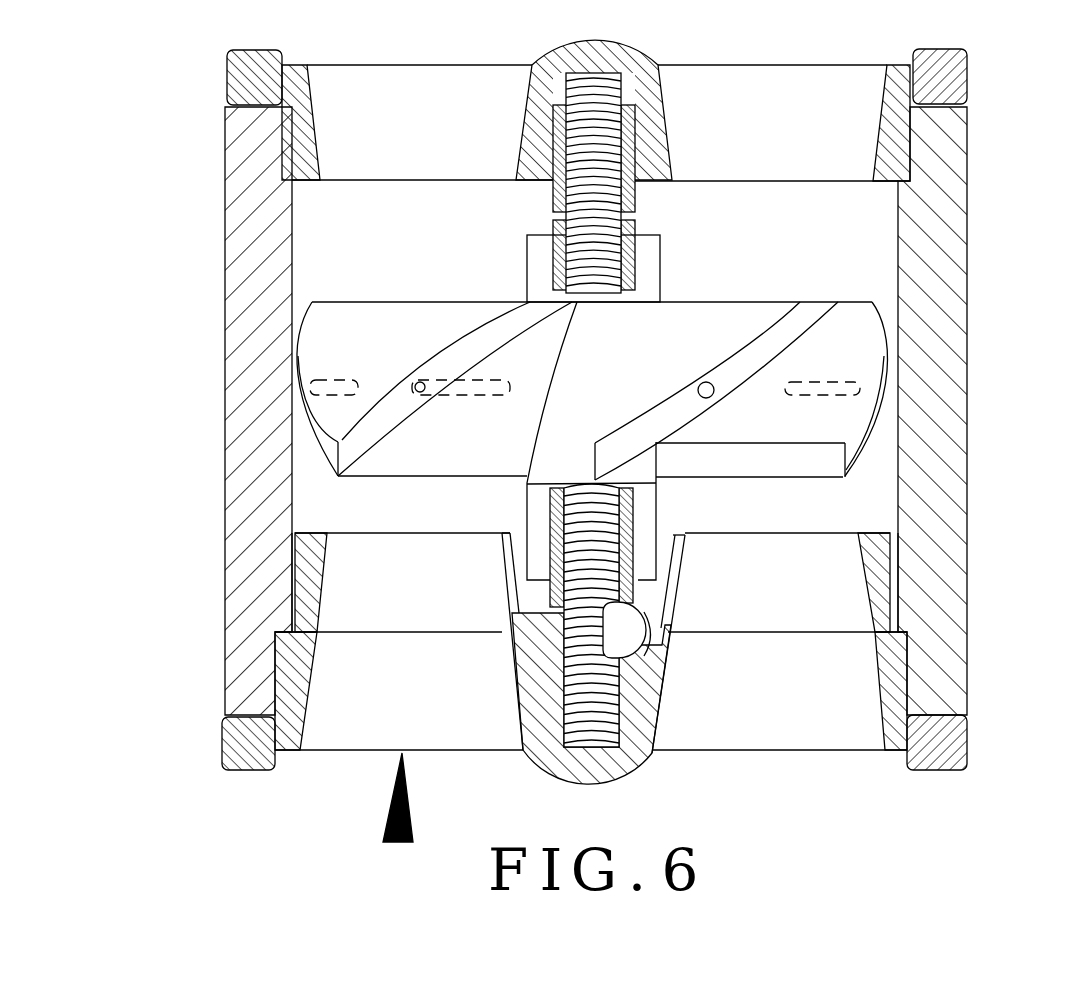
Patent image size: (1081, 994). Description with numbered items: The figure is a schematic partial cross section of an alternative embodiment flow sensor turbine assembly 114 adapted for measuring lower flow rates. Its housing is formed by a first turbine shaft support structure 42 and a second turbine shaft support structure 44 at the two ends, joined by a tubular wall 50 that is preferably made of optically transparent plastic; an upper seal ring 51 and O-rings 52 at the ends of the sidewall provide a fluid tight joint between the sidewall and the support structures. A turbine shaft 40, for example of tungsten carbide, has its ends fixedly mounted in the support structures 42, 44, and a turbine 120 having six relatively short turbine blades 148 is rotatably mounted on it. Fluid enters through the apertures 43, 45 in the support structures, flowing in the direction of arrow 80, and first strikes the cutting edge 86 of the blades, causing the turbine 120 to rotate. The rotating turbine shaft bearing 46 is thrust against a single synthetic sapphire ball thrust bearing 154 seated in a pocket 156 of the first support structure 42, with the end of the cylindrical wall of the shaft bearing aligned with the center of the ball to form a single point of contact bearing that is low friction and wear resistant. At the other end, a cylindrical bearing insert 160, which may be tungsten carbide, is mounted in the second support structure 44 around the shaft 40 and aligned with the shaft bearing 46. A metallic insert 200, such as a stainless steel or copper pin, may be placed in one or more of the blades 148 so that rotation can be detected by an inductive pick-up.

The turbine shaft 40 is at (633, 258).
The first turbine shaft support structure 42 is at (300, 750).
The aperture 43 is at (368, 730).
The second turbine shaft support structure 44 is at (883, 92).
The aperture 45 is at (433, 80).
The turbine shaft bearing 46 is at (633, 277).
The tubular wall 50 is at (967, 370).
The upper seal ring 51 is at (968, 73).
The O-rings 52 is at (968, 746).
The arrow 80 is at (412, 802).
The cutting edge 86 is at (330, 482).
The turbine assembly 114 is at (216, 480).
The turbine 120 is at (372, 303).
The turbine blades 148 is at (860, 452).
The synthetic sapphire ball thrust bearing 154 is at (660, 677).
The pocket 156 is at (663, 647).
The cylindrical bearing insert 160 is at (632, 153).
The metallic insert 200 is at (402, 385).